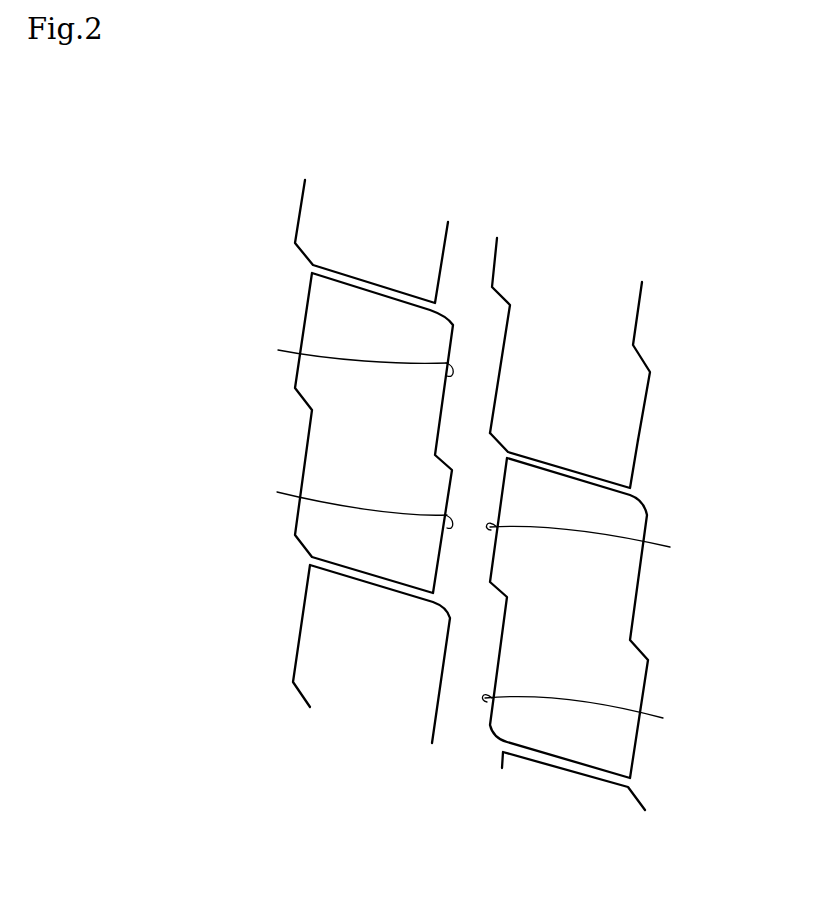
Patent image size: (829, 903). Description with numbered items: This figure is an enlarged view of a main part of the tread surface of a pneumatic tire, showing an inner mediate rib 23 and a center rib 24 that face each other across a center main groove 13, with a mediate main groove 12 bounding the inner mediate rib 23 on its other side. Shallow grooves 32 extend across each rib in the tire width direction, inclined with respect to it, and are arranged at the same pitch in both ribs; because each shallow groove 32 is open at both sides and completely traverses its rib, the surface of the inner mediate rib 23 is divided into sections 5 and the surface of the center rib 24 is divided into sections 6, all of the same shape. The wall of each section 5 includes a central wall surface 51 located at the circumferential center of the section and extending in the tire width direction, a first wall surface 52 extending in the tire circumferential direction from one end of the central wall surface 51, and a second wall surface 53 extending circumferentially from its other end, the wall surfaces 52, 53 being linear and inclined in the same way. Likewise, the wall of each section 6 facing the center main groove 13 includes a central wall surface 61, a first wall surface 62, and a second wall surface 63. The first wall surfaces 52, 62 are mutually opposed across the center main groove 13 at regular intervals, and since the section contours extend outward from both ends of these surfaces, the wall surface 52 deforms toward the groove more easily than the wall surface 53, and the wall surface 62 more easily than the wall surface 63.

The section 5 is at (332, 448).
The section 6 is at (560, 381).
The mediate main groove 12 is at (268, 668).
The center main groove 13 is at (462, 727).
The inner mediate rib 23 is at (374, 212).
The center rib 24 is at (568, 270).
The shallow groove 32 is at (340, 278).
The central wall surface 51 is at (443, 460).
The first wall surface 52 is at (347, 504).
The second wall surface 53 is at (348, 356).
The central wall surface 61 is at (498, 588).
The first wall surface 62 is at (592, 542).
The second wall surface 63 is at (588, 714).